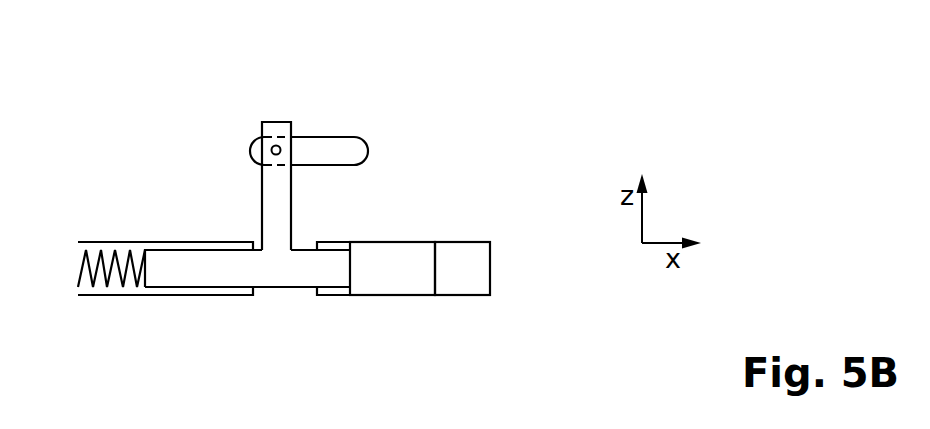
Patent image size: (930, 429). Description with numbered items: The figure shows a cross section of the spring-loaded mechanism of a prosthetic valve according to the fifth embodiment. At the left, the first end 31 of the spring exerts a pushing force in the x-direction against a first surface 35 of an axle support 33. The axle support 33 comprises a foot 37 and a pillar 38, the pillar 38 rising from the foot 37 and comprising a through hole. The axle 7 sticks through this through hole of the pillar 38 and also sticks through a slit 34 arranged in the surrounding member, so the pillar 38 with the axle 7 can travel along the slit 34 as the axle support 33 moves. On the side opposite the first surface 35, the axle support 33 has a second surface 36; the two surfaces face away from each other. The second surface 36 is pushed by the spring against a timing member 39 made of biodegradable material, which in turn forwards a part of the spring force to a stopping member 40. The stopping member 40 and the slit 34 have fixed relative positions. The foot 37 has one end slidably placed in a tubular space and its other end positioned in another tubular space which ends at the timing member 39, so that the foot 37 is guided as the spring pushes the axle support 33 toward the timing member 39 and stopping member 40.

The axle 7 is at (254, 143).
The first end of the spring 31 is at (123, 257).
The axle support 33 is at (302, 208).
The slit 34 is at (347, 152).
The first surface 35 is at (145, 272).
The second surface 36 is at (352, 268).
The foot 37 is at (280, 263).
The pillar 38 is at (278, 182).
The timing member 39 is at (402, 262).
The stopping member 40 is at (460, 263).